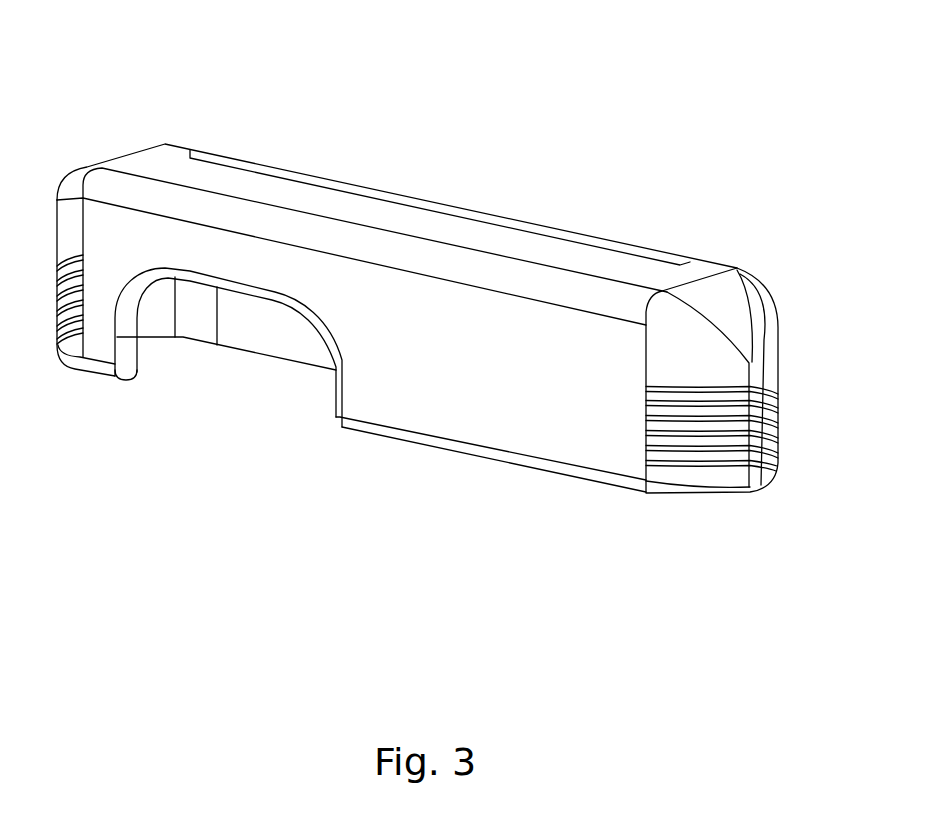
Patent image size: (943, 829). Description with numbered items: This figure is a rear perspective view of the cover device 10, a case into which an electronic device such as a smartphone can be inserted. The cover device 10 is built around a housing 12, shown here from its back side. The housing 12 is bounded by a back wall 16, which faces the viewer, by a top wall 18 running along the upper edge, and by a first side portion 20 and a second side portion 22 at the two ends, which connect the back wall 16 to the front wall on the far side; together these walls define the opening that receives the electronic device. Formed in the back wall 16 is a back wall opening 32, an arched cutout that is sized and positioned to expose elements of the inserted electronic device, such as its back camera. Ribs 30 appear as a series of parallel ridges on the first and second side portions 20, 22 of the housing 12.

The cover device 10 is at (637, 198).
The housing 12 is at (349, 240).
The back wall 16 is at (498, 432).
The top wall 18 is at (173, 158).
The first side portion 20 is at (73, 213).
The second side portion 22 is at (693, 355).
The ribs 30 is at (703, 460).
The back wall opening 32 is at (140, 293).